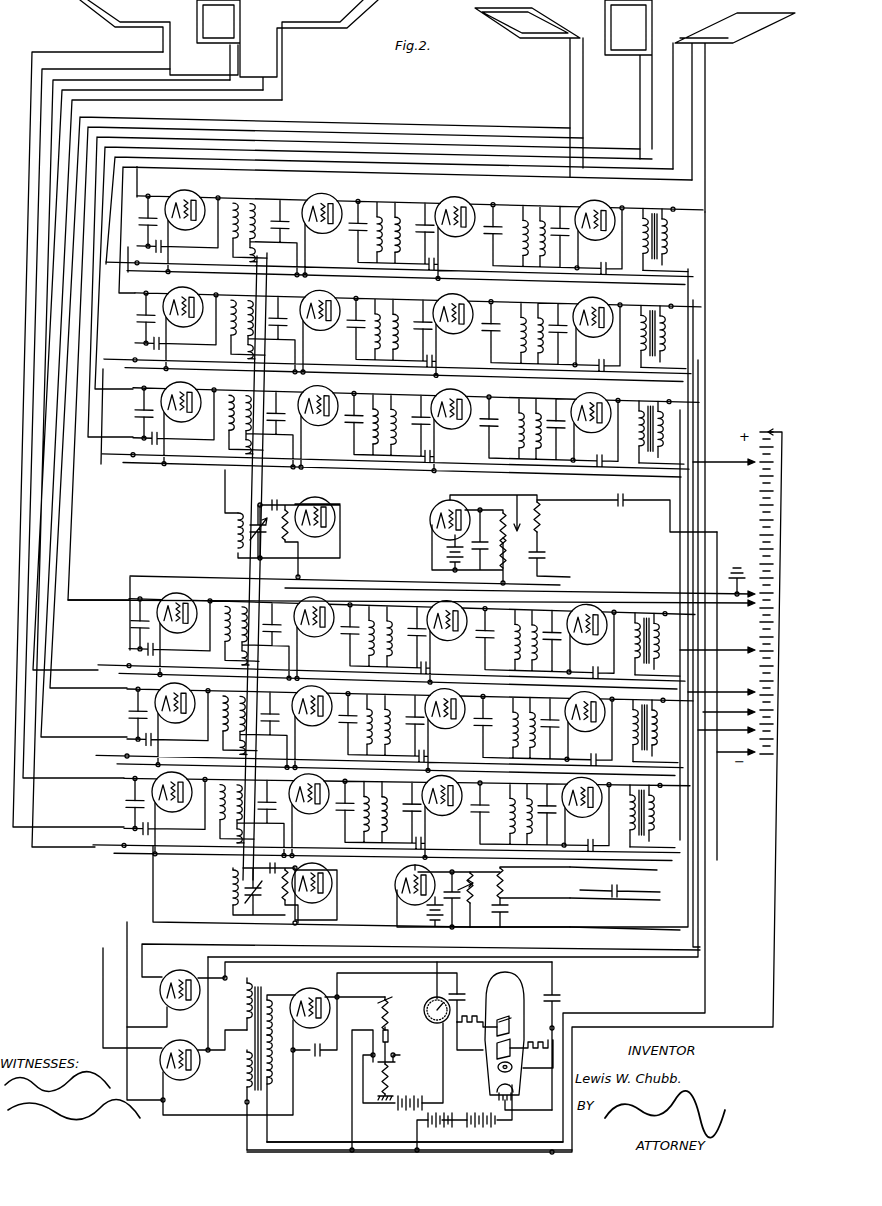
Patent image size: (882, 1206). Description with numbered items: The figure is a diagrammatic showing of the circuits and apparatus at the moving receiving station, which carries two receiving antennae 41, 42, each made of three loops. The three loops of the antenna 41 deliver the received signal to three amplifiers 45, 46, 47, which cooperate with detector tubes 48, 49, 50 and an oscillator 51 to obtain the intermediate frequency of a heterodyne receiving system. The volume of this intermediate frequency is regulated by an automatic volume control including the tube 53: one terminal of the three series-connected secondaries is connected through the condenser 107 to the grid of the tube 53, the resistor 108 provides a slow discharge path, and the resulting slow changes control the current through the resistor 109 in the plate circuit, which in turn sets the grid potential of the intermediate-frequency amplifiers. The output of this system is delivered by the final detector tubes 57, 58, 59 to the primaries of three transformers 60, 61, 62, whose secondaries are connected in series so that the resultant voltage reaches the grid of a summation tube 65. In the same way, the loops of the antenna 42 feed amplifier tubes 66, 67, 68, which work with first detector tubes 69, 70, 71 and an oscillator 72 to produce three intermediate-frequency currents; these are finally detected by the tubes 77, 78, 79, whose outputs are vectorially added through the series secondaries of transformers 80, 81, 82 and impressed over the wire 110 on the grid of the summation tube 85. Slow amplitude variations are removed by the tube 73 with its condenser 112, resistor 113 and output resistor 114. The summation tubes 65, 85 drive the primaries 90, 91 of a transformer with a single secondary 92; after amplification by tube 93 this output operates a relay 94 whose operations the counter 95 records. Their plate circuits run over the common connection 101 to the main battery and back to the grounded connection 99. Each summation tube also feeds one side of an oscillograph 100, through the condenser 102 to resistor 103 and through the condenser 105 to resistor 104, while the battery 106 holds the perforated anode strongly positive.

The receiving antenna 41 is at (270, 25).
The receiving antenna 42 is at (684, 34).
The amplifier 45 is at (177, 603).
The amplifier 46 is at (175, 714).
The amplifier 47 is at (172, 803).
The detector tube 48 is at (314, 632).
The detector tube 49 is at (312, 720).
The detector tube 50 is at (310, 809).
The oscillator 51 is at (318, 897).
The automatic volume control tube 53 is at (395, 880).
The final detector tube 57 is at (587, 636).
The final detector tube 58 is at (589, 721).
The final detector tube 59 is at (582, 811).
The transformer 60 is at (647, 635).
The transformer 61 is at (645, 723).
The transformer 62 is at (642, 809).
The summation tube 65 is at (178, 1043).
The amplifier tube 66 is at (190, 201).
The amplifier tube 67 is at (189, 315).
The amplifier tube 68 is at (188, 411).
The first detector tube 69 is at (322, 226).
The first detector tube 70 is at (320, 323).
The first detector tube 71 is at (319, 419).
The oscillator 72 is at (322, 536).
The volume-control vacuum tube 73 is at (433, 506).
The final detector 77 is at (598, 230).
The final detector 78 is at (597, 327).
The final detector 79 is at (596, 422).
The transformer 80 is at (655, 229).
The transformer 81 is at (653, 328).
The transformer 82 is at (651, 425).
The summation tube 85 is at (179, 971).
The transformer primary 90 is at (237, 1100).
The transformer primary 91 is at (244, 1009).
The transformer secondary 92 is at (272, 1045).
The amplifier tube 93 is at (318, 986).
The relay 94 is at (403, 1053).
The counter 95 is at (432, 998).
The grounded connection 99 is at (733, 578).
The oscillograph 100 is at (518, 1041).
The common connection 101 is at (247, 1145).
The condenser 102 is at (558, 994).
The resistor 103 is at (532, 1047).
The resistor 104 is at (477, 1026).
The condenser 105 is at (462, 993).
The battery 106 is at (462, 1110).
The condenser 107 is at (612, 895).
The resistor 108 is at (505, 888).
The resistor 109 is at (479, 899).
The wire 110 is at (706, 218).
The condenser 112 is at (621, 506).
The resistor 113 is at (548, 520).
The resistor 114 is at (515, 540).